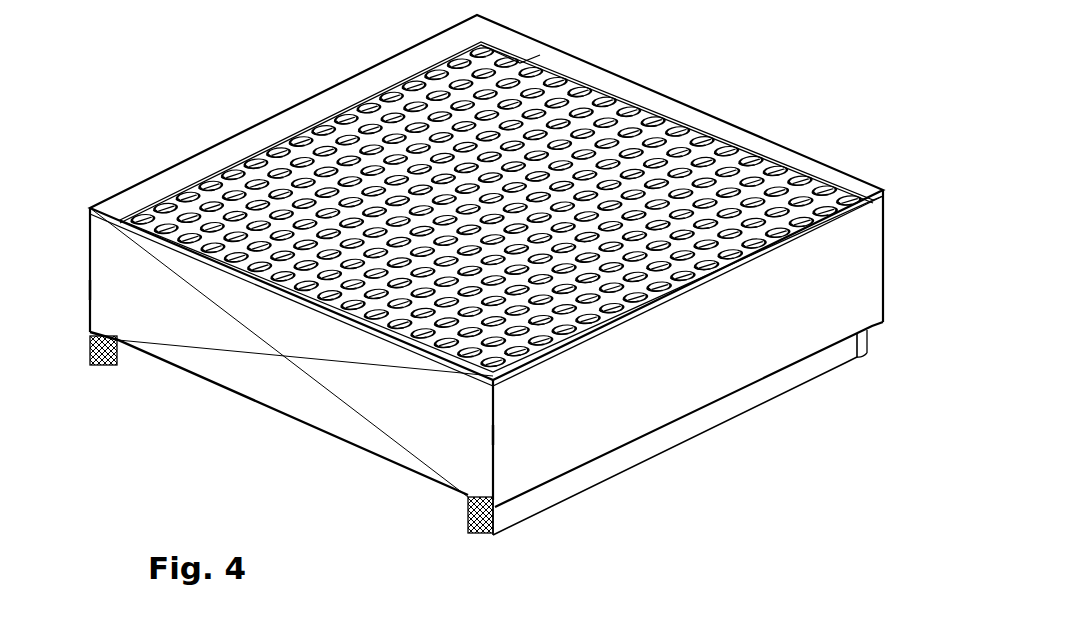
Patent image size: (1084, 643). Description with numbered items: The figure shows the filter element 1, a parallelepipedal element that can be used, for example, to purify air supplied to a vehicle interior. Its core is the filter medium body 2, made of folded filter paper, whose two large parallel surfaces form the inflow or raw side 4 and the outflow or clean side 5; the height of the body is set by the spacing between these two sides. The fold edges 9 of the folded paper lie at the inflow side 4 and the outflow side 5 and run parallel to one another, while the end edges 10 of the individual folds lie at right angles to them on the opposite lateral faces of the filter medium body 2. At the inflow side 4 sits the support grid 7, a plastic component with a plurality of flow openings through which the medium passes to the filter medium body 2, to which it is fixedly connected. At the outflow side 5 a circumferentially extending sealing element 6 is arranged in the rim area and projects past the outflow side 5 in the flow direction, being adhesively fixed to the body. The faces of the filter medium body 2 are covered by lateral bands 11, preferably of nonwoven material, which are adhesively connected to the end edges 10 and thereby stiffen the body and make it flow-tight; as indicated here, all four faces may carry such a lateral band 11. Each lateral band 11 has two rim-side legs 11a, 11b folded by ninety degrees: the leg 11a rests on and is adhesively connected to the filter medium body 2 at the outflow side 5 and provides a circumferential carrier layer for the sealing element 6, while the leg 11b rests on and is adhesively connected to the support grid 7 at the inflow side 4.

The filter element 1 is at (298, 84).
The filter medium body 2 is at (298, 395).
The inflow side 4 is at (257, 147).
The outflow side 5 is at (368, 452).
The sealing element 6 is at (758, 397).
The support grid 7 is at (453, 60).
The fold edges 9 is at (223, 383).
The end edges 10 is at (93, 299).
The lateral band 11 is at (88, 245).
The leg 11a is at (490, 493).
The leg 11b is at (160, 186).